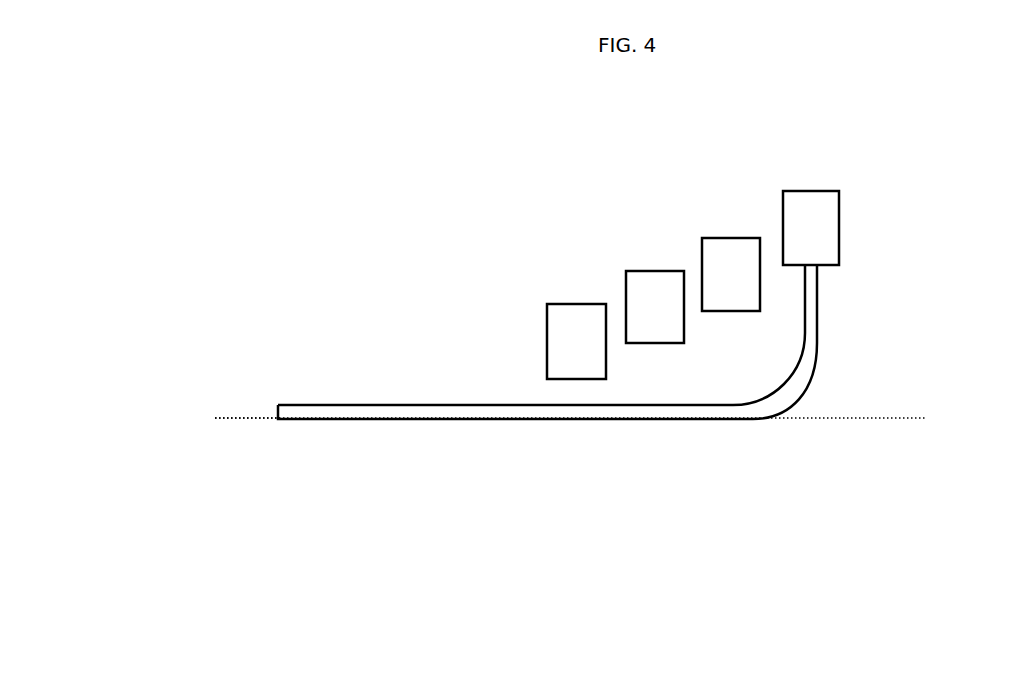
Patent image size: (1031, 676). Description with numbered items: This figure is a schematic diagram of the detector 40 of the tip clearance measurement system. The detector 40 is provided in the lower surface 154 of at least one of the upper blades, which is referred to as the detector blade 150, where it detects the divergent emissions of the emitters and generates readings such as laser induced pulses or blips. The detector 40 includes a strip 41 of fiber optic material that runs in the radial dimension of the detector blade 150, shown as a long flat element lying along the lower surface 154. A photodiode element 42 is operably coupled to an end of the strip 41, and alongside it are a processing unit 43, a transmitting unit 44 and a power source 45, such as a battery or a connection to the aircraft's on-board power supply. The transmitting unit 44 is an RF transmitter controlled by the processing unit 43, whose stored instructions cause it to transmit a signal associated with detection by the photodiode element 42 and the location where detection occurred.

The detector 40 is at (641, 284).
The strip 41 is at (433, 390).
The photodiode element 42 is at (745, 195).
The processing unit 43 is at (660, 242).
The transmitting unit 44 is at (597, 272).
The power source 45 is at (532, 302).
The detector blade 150 is at (904, 420).
The lower surface 154 is at (228, 419).